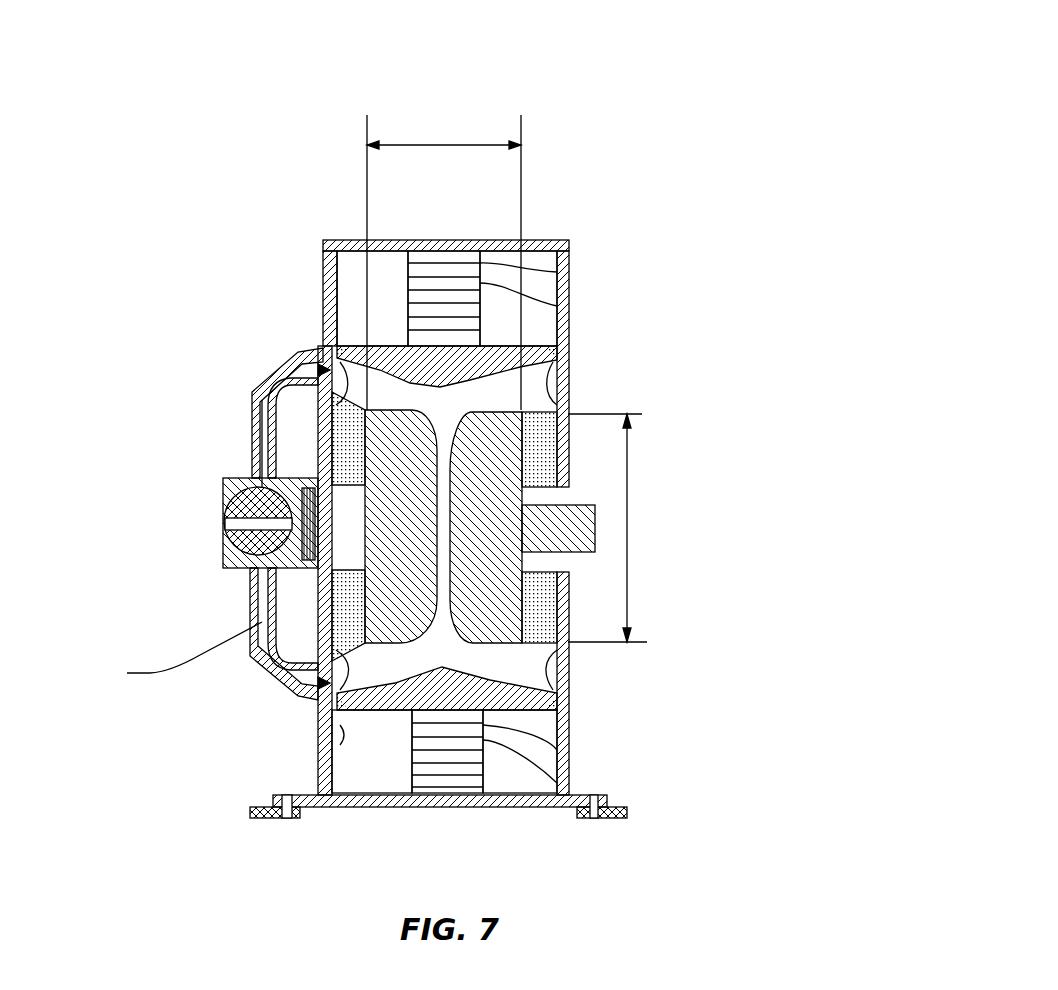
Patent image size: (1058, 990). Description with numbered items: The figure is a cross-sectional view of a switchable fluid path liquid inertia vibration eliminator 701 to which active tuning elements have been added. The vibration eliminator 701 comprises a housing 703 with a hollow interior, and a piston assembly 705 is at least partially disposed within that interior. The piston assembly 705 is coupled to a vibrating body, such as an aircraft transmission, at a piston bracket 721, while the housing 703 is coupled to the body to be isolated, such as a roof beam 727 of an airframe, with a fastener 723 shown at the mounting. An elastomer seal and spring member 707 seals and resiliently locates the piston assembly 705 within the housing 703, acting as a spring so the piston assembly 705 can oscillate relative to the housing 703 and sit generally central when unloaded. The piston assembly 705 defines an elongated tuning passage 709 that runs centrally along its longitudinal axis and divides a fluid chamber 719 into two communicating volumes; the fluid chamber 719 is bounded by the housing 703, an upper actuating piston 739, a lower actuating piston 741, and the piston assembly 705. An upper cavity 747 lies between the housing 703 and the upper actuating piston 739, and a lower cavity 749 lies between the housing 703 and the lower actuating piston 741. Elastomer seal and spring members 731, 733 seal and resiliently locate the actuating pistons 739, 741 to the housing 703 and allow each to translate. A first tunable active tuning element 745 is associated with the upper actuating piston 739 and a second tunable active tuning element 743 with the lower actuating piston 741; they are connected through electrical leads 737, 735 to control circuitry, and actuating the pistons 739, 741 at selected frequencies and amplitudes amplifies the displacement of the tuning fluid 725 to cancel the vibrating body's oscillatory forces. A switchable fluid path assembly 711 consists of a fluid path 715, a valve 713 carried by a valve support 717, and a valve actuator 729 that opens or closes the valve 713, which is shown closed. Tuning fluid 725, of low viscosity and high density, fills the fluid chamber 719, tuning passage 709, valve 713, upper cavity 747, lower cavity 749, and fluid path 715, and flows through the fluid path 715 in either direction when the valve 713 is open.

The switchable fluid path liquid inertia vibration eliminator 701 is at (634, 76).
The housing 703 is at (570, 405).
The piston assembly 705 is at (362, 345).
The elastomer seal and spring member 707 is at (318, 352).
The tuning passage 709 is at (437, 447).
The switchable fluid path assembly 711 is at (238, 478).
The valve 713 is at (245, 523).
The fluid path 715 is at (252, 398).
The valve support 717 is at (225, 490).
The fluid chamber 719 is at (560, 350).
The piston bracket 721 is at (577, 503).
The bolt 723 is at (308, 808).
The tuning fluid 725 is at (338, 732).
The roof beam 727 is at (270, 818).
The valve actuator 729 is at (272, 569).
The elastomer seal and spring member 731 is at (340, 320).
The elastomer seal and spring member 733 is at (345, 713).
The electrical lead 735 is at (565, 775).
The electrical lead 737 is at (569, 290).
The upper actuating piston 739 is at (530, 333).
The lower actuating piston 741 is at (388, 713).
The second tunable active tuning element 743 is at (452, 765).
The first tunable active tuning element 745 is at (462, 288).
The upper cavity 747 is at (392, 277).
The lower cavity 749 is at (513, 768).